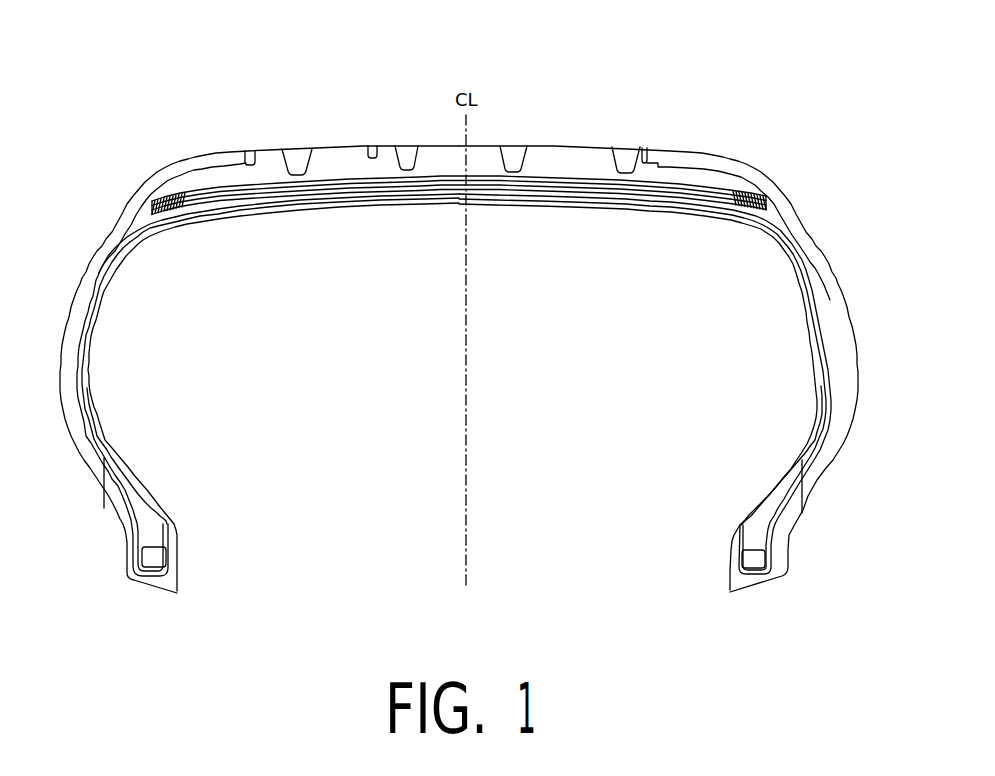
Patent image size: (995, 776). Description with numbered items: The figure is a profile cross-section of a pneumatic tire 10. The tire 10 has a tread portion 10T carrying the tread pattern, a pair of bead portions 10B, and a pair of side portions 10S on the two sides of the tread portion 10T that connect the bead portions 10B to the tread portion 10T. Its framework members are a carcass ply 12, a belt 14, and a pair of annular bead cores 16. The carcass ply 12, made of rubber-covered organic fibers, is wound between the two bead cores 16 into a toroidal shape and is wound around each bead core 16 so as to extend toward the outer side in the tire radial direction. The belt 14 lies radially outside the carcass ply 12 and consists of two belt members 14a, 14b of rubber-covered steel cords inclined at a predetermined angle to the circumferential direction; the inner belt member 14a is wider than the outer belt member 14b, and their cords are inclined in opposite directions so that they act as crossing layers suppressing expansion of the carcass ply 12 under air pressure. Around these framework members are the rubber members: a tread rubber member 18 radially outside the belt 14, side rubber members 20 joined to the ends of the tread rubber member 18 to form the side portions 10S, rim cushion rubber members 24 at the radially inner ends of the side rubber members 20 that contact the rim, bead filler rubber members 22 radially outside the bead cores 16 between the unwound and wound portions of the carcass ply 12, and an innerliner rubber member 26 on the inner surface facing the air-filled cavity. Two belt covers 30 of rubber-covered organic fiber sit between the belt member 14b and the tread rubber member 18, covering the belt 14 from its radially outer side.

The pneumatic tire 10 is at (460, 334).
The tread portion 10T is at (736, 135).
The side portion 10S is at (56, 342).
The bead portion 10B is at (135, 590).
The carcass ply 12 is at (246, 214).
The belt 14 is at (342, 250).
The belt member 14a is at (278, 205).
The belt member 14b is at (317, 186).
The bead core 16 is at (160, 556).
The tread rubber member 18 is at (648, 150).
The side rubber member 20 is at (833, 308).
The bead filler rubber member 22 is at (758, 516).
The rim cushion rubber member 24 is at (782, 534).
The innerliner rubber member 26 is at (212, 222).
The belt cover 30 is at (277, 207).